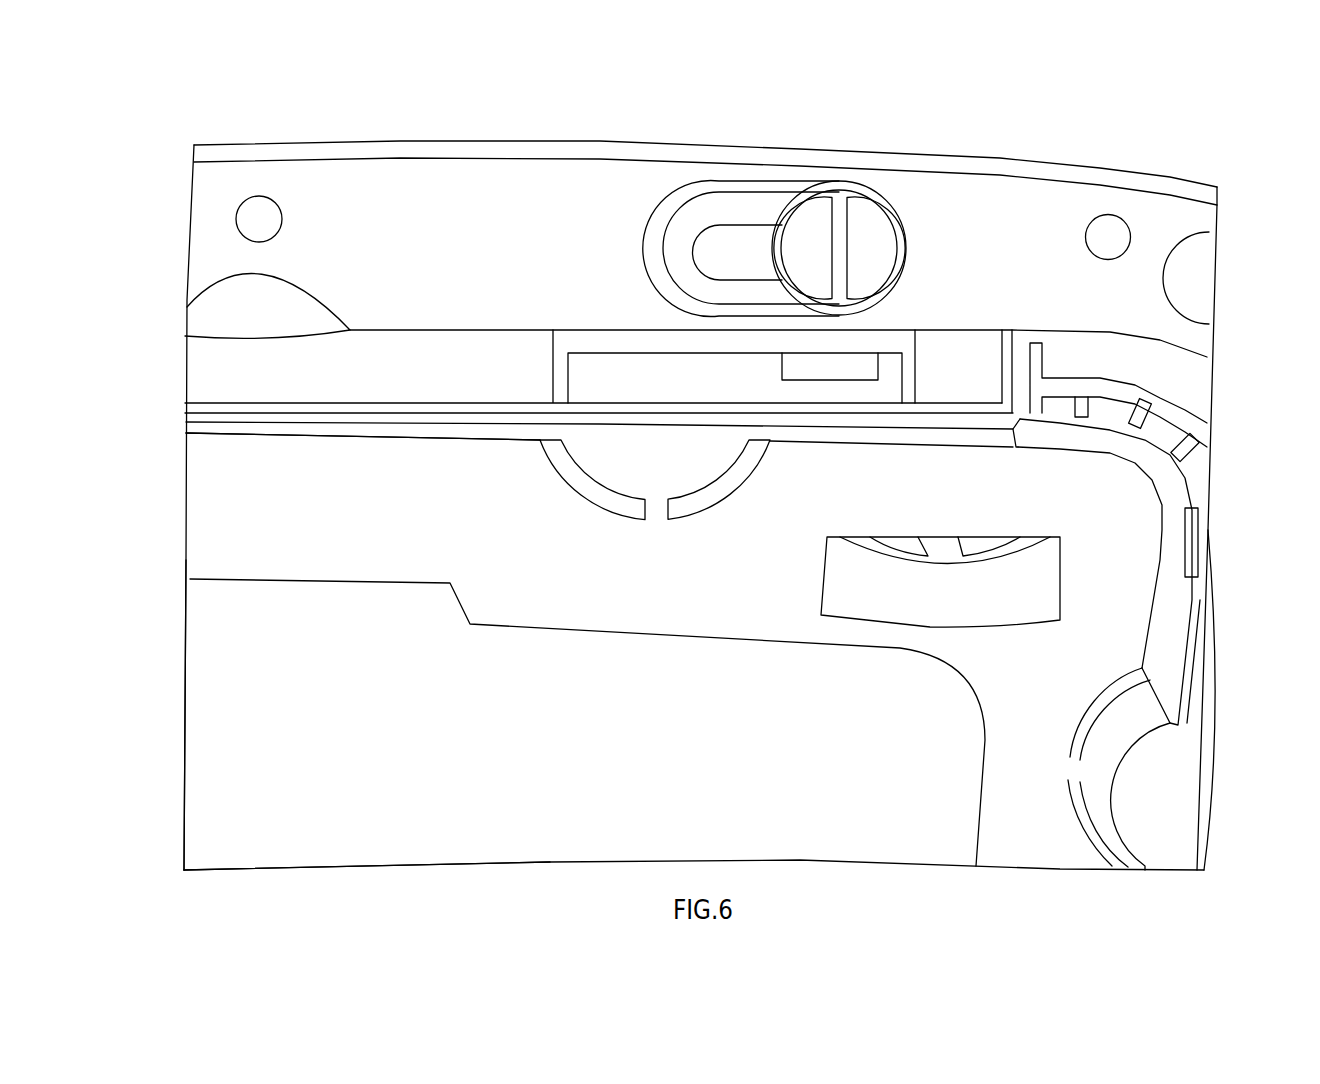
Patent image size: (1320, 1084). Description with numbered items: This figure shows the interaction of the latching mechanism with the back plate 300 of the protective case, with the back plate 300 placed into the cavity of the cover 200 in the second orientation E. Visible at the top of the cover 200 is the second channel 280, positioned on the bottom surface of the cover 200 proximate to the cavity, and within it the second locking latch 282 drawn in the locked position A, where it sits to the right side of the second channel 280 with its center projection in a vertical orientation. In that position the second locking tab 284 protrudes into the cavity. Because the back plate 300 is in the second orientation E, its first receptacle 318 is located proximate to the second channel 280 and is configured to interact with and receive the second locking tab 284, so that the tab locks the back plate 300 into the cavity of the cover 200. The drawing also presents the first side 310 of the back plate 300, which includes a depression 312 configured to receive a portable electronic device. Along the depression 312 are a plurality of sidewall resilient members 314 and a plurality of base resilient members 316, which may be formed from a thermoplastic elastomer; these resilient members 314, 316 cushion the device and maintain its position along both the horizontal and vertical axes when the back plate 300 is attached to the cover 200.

The cover 200 is at (184, 238).
The second channel 280 is at (682, 230).
The second locking latch 282 is at (822, 207).
The second locking tab 284 is at (852, 363).
The first receptacle 318 is at (907, 376).
The sidewall resilient members 314 is at (684, 462).
The base resilient members 316 is at (889, 597).
The back plate 300 is at (284, 823).
The depression 312 is at (387, 808).
The first side 310 is at (448, 823).
The locked position A is at (654, 200).
The second orientation E is at (212, 760).